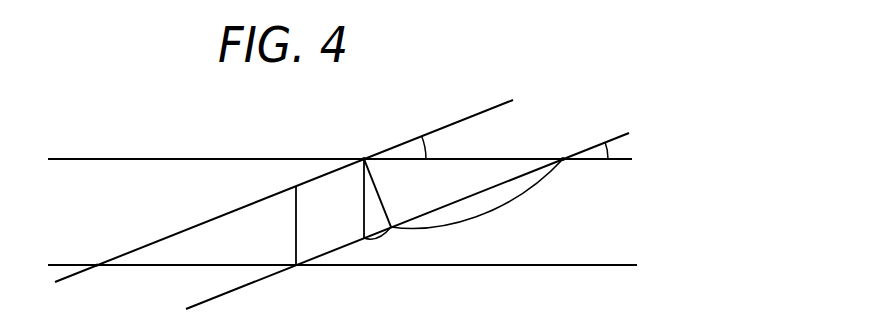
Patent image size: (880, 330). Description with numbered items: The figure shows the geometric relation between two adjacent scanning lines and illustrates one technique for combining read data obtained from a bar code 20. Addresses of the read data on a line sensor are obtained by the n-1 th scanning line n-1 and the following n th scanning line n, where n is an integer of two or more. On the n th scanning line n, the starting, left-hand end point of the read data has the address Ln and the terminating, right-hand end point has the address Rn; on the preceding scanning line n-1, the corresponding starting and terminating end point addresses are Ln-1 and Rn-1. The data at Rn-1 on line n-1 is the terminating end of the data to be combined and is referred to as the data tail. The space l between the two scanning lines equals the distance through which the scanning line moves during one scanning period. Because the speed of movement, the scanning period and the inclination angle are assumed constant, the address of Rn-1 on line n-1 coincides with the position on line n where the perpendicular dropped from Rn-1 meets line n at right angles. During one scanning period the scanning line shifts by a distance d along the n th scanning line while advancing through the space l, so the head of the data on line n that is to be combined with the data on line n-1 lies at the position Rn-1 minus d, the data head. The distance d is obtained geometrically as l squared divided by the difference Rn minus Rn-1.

The bar code 20 is at (98, 163).
The n-1 th scanning line n-1 is at (287, 182).
The n th scanning line n is at (407, 210).
The terminating end point address on n-1 th scanning line Rn-1 is at (363, 158).
The terminating end point address on n th scanning line Rn is at (530, 228).
The starting end point address on n th scanning line Ln is at (297, 243).
The starting end point address on n-1 th scanning line Ln-1 is at (101, 283).
The space between scanning lines l is at (374, 164).
The distance d is at (380, 245).